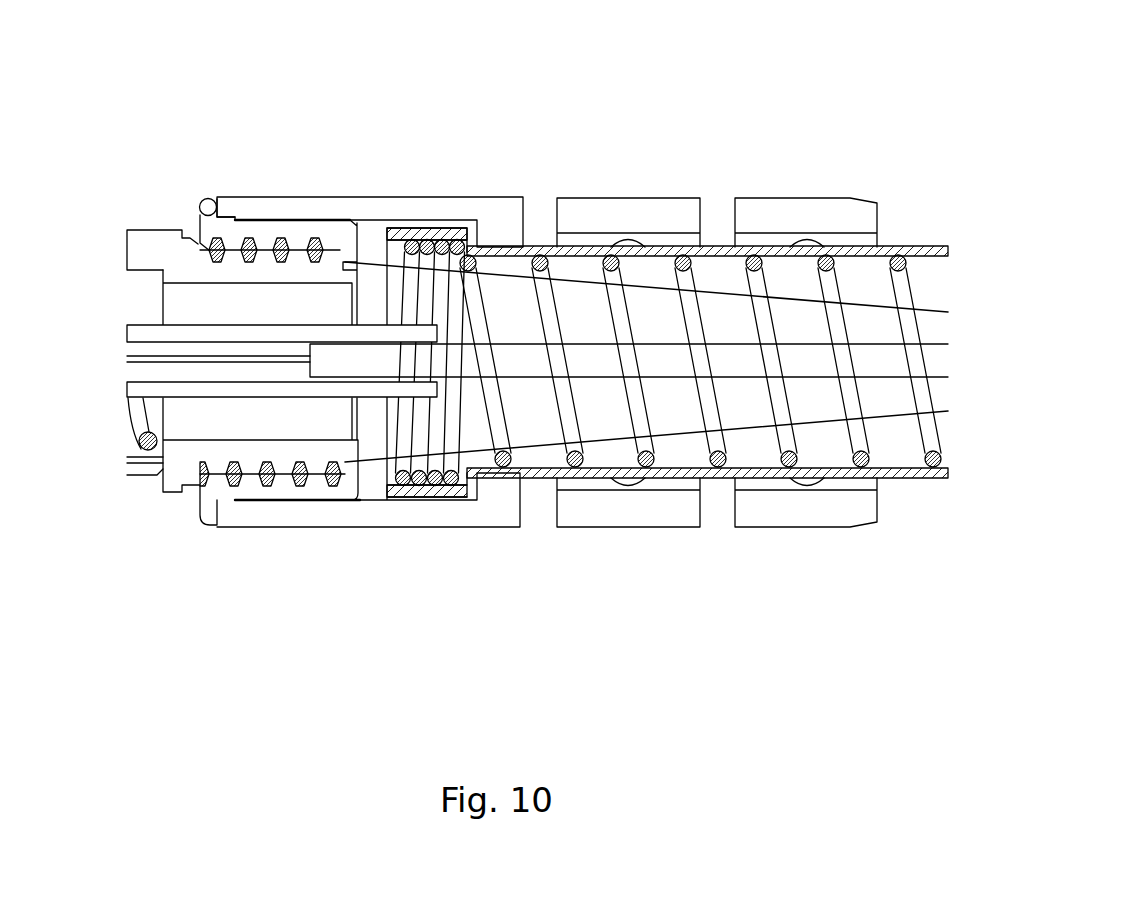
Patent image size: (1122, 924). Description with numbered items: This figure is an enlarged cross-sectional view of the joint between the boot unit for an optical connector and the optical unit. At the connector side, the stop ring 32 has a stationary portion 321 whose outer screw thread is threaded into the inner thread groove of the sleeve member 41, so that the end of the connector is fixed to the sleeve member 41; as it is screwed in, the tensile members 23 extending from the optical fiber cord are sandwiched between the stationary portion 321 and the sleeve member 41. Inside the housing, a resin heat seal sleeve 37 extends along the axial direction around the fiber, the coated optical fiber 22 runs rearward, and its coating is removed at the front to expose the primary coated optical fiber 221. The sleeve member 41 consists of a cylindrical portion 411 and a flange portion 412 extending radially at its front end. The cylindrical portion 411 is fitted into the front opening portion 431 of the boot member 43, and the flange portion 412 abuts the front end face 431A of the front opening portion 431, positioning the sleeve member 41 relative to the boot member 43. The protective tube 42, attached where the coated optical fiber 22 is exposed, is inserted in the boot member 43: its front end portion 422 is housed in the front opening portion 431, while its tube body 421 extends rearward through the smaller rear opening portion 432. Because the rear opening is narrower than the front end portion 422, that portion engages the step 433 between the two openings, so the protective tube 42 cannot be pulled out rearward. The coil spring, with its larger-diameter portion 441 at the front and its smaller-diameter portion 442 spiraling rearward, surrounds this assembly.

The coated optical fiber 22 is at (678, 365).
The primary coated optical fiber 221 is at (137, 324).
The tensile members 23 is at (857, 292).
The stop ring 32 is at (135, 462).
The stationary portion 321 is at (250, 455).
The heat seal sleeve 37 is at (192, 323).
The sleeve member 41 is at (514, 332).
The cylindrical portion 411 is at (297, 223).
The flange portion 412 is at (214, 210).
The protective tube 42 is at (550, 503).
The tube body 421 is at (840, 476).
The front end portion 422 is at (442, 494).
The boot member 43 is at (626, 166).
The front opening portion 431 is at (375, 217).
The front end face 431A is at (200, 205).
The rear opening portion 432 is at (870, 238).
The step 433 is at (462, 243).
The larger-diameter portion 441 is at (428, 232).
The smaller-diameter portion 442 is at (753, 249).